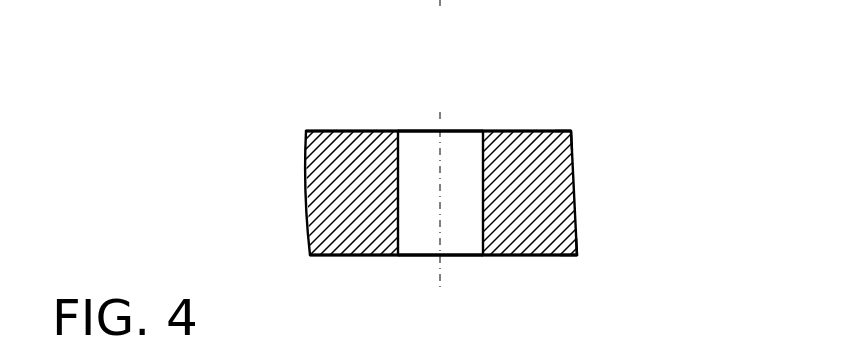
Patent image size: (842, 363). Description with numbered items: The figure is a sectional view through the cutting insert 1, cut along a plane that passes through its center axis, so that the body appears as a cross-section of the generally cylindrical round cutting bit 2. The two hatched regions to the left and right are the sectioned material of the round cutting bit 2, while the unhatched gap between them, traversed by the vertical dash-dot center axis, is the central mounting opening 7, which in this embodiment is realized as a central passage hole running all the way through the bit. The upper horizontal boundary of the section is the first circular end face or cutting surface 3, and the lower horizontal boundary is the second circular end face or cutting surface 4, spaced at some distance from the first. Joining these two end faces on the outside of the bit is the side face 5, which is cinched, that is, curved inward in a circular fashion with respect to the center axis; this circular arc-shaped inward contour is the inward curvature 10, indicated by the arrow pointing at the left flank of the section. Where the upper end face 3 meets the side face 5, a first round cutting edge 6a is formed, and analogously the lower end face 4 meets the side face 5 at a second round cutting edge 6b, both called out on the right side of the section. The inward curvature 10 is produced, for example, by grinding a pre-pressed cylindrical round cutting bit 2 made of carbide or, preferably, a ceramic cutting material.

The cutting insert 1 is at (692, 99).
The round cutting bit 2 is at (535, 152).
The first end face 3 is at (348, 131).
The second end face 4 is at (515, 256).
The side face 5 is at (575, 168).
The first round cutting edge 6a is at (576, 131).
The second round cutting edge 6b is at (578, 251).
The central mounting opening 7 is at (459, 143).
The inward curvature 10 is at (296, 202).